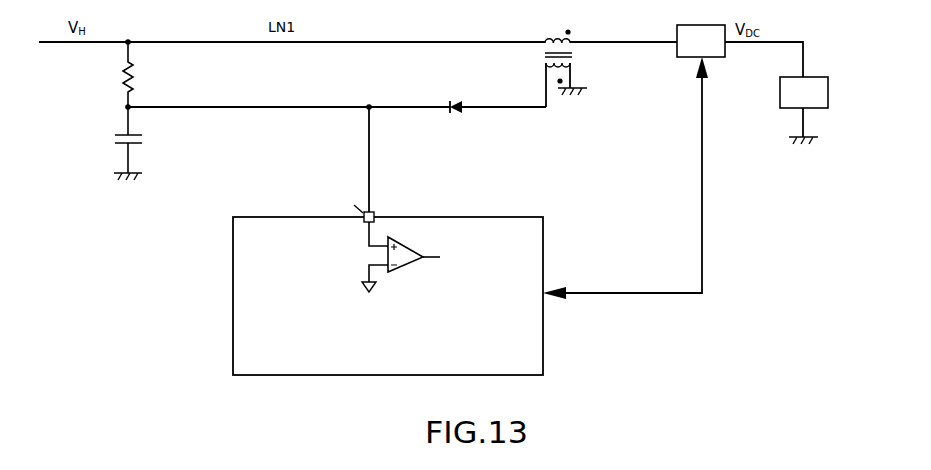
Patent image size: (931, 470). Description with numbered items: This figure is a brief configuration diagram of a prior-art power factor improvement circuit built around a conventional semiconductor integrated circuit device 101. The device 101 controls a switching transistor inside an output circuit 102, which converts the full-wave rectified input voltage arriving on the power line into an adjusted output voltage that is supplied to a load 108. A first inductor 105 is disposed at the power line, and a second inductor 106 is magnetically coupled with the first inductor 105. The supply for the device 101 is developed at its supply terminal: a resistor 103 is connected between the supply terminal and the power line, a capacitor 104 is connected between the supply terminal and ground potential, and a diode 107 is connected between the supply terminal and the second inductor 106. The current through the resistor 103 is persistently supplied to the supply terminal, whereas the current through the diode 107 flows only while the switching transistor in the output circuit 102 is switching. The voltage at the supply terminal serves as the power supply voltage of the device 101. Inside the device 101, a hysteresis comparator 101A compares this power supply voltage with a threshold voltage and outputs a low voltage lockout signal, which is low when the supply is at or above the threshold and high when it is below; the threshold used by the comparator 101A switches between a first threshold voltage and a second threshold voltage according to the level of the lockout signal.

The conventional semiconductor integrated circuit device 101 is at (496, 216).
The comparator 101A is at (410, 268).
The output circuit 102 is at (700, 24).
The resistor 103 is at (140, 79).
The capacitor 104 is at (142, 140).
The inductor 105 is at (577, 34).
The inductor 106 is at (573, 67).
The diode 107 is at (455, 112).
The load 108 is at (829, 90).